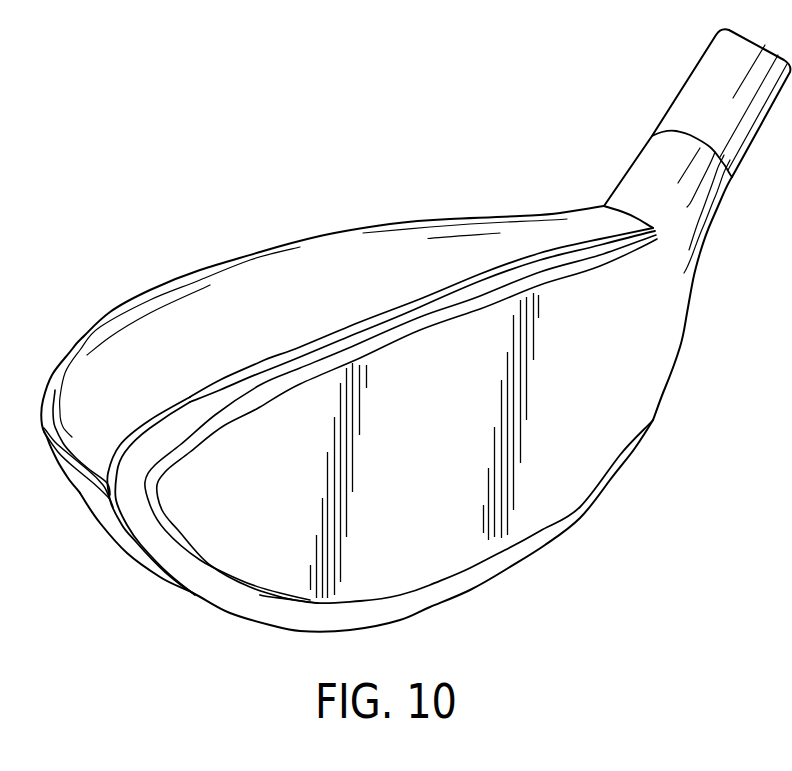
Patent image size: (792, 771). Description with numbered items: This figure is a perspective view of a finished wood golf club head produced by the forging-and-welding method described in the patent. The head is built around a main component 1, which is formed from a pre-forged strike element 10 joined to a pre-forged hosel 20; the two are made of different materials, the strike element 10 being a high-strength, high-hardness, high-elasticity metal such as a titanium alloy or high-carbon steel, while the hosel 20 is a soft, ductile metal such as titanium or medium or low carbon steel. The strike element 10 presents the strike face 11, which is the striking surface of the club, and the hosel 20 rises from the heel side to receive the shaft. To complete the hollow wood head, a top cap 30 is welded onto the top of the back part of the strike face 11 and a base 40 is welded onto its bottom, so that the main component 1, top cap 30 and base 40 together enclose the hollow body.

The main component 1 is at (405, 347).
The strike element 10 is at (454, 620).
The strike face 11 is at (530, 512).
The hosel 20 is at (625, 137).
The top cap 30 is at (275, 221).
The base 40 is at (96, 551).